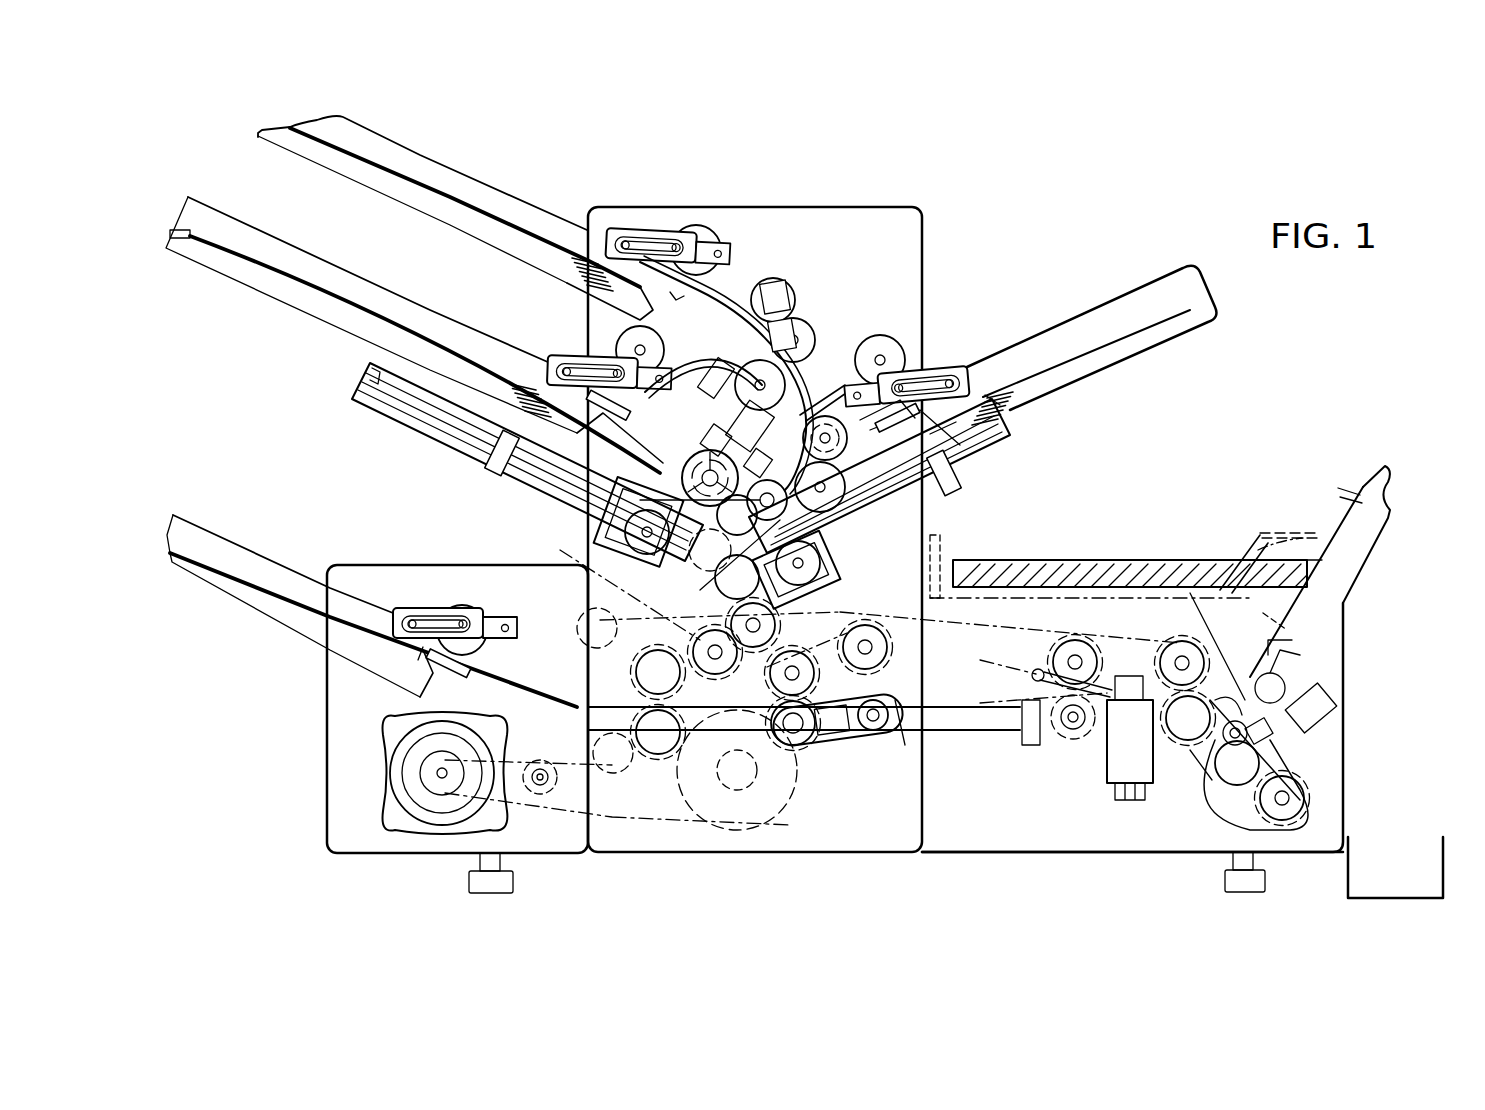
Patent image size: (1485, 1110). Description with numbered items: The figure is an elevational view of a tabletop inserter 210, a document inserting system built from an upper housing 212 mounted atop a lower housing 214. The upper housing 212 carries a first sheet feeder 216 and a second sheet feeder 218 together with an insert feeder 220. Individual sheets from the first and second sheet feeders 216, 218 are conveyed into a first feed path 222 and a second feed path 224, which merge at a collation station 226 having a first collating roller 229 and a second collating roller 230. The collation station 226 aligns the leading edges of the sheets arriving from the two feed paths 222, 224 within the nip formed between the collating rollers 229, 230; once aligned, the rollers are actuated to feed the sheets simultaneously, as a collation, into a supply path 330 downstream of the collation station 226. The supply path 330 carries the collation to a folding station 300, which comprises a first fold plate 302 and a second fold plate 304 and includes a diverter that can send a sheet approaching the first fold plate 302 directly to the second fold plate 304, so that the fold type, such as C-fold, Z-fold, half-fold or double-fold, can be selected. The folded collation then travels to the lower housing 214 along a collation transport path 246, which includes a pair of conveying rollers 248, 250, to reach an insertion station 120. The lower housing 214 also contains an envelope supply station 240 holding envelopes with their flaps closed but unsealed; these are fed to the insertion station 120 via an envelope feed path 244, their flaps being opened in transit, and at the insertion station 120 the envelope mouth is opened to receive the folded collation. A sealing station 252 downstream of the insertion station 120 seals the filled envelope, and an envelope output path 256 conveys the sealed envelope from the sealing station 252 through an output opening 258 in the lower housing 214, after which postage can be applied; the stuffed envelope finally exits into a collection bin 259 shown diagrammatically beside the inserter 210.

The tabletop inserter 210 is at (1130, 210).
The upper housing 212 is at (808, 203).
The lower housing 214 is at (970, 556).
The first sheet feeder 216 is at (458, 166).
The second sheet feeder 218 is at (304, 238).
The insert feeder 220 is at (1088, 300).
The first feed path 222 is at (746, 300).
The second feed path 224 is at (612, 345).
The collation station 226 is at (810, 302).
The first collating roller 229 is at (803, 355).
The second collating roller 230 is at (770, 408).
The envelope supply station 240 is at (241, 614).
The envelope feed path 244 is at (506, 607).
The collation transport path 246 is at (622, 610).
The conveying roller 248 is at (760, 625).
The conveying roller 250 is at (727, 677).
The insertion station 120 is at (851, 762).
The sealing station 252 is at (1168, 772).
The envelope output path 256 is at (1222, 800).
The output opening 258 is at (1343, 836).
The collection bin 259 is at (1347, 863).
The folding station 300 is at (802, 368).
The first fold plate 302 is at (386, 424).
The second fold plate 304 is at (1005, 495).
The supply path 330 is at (792, 420).